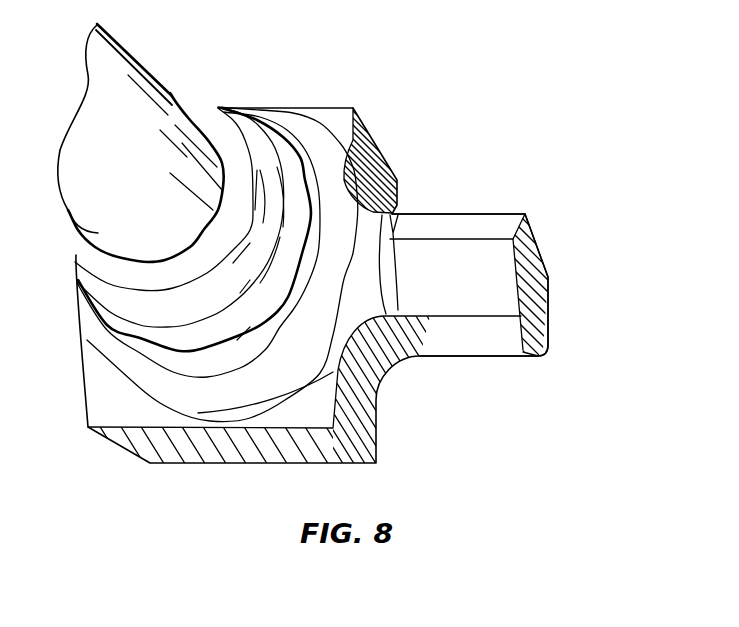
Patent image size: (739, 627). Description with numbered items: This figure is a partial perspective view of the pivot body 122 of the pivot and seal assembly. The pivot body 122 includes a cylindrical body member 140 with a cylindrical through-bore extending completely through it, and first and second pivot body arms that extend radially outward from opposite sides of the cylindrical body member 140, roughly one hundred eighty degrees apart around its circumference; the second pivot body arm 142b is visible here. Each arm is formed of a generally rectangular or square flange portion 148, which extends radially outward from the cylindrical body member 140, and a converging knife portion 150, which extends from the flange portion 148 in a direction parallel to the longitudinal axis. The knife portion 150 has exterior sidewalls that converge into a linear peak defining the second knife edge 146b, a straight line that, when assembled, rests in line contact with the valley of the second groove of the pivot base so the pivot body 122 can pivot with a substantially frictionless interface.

The pivot body 122 is at (362, 113).
The cylindrical body member 140 is at (375, 170).
The second knife edge 146b is at (473, 288).
The knife portion 150 is at (525, 252).
The second pivot body arm 142b is at (533, 285).
The flange portion 148 is at (532, 327).